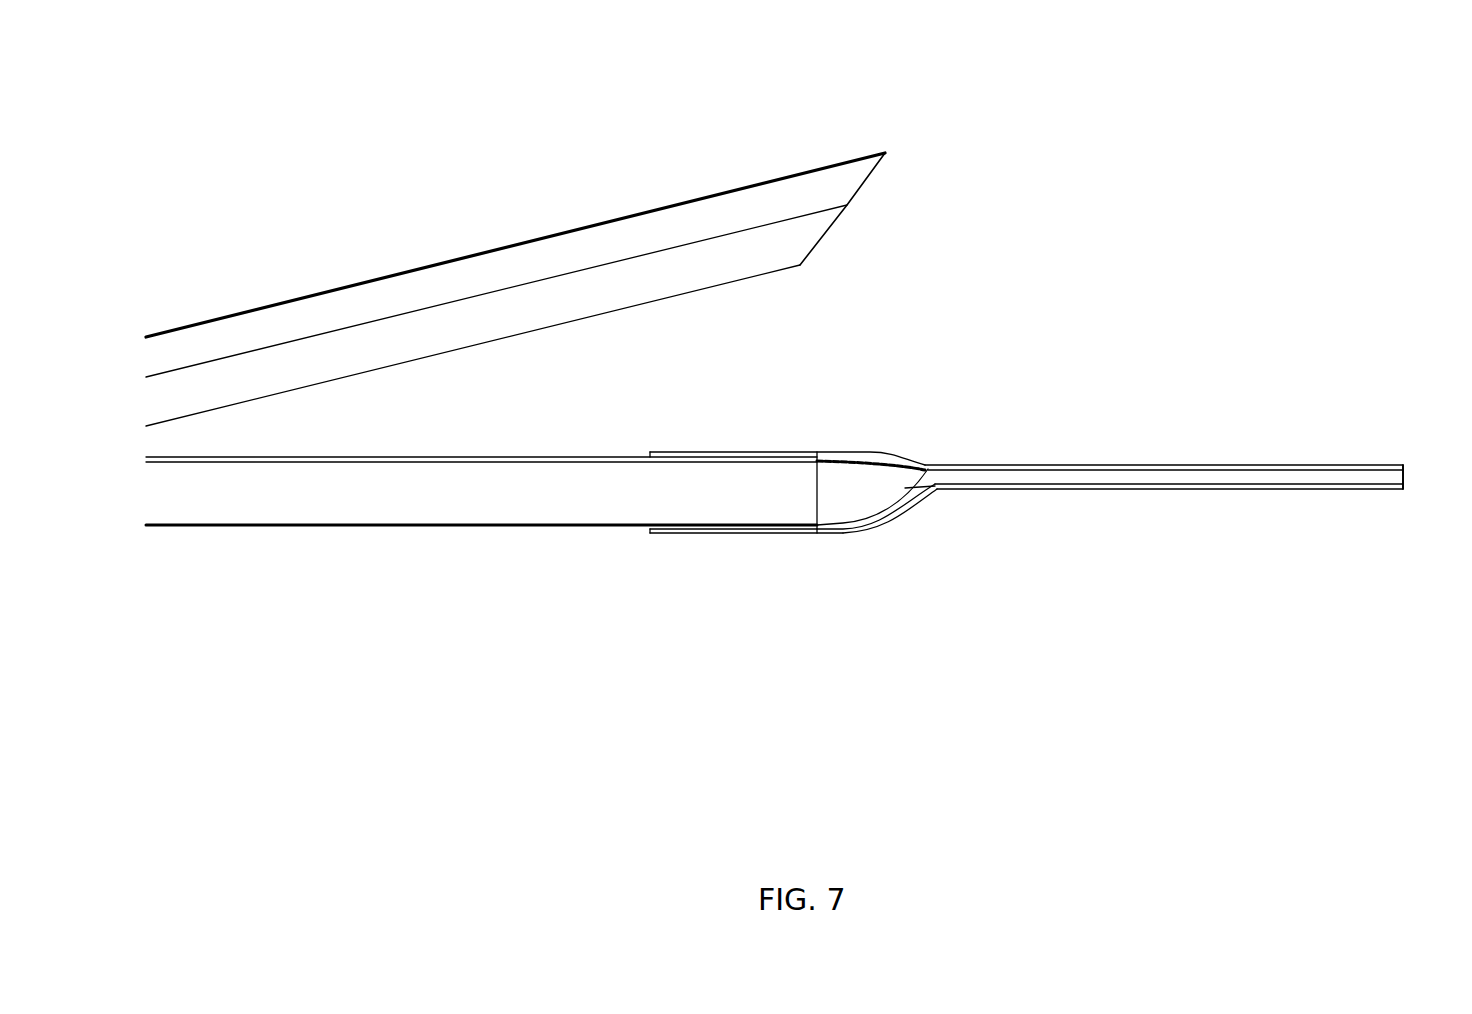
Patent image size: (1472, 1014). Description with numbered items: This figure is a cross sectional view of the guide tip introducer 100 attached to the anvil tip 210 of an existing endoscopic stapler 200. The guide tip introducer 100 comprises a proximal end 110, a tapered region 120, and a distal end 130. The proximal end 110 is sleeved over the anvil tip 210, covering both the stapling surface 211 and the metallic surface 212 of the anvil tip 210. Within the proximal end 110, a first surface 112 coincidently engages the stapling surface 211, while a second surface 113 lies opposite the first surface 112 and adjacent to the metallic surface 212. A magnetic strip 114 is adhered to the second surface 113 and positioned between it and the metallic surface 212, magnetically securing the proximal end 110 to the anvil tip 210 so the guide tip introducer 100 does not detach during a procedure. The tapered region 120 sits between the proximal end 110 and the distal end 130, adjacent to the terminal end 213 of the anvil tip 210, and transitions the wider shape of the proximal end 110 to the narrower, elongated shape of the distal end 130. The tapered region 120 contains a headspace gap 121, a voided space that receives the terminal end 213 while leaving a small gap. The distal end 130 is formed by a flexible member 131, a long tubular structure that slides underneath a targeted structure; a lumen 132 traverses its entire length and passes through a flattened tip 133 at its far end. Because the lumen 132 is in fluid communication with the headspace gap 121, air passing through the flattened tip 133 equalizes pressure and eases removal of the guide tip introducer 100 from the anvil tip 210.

The guide tip introducer 100 is at (1213, 368).
The proximal end 110 is at (710, 446).
The first surface 112 is at (650, 453).
The second surface 113 is at (650, 530).
The magnetic strip 114 is at (733, 527).
The tapered region 120 is at (870, 543).
The headspace gap 121 is at (920, 494).
The distal end 130 is at (1143, 450).
The flexible member 131 is at (1170, 508).
The lumen 132 is at (1281, 464).
The flattened tip 133 is at (1405, 465).
The endoscopic stapler 200 is at (568, 186).
The anvil tip 210 is at (330, 538).
The stapling surface 211 is at (485, 448).
The metallic surface 212 is at (478, 528).
The terminal end 213 is at (893, 473).